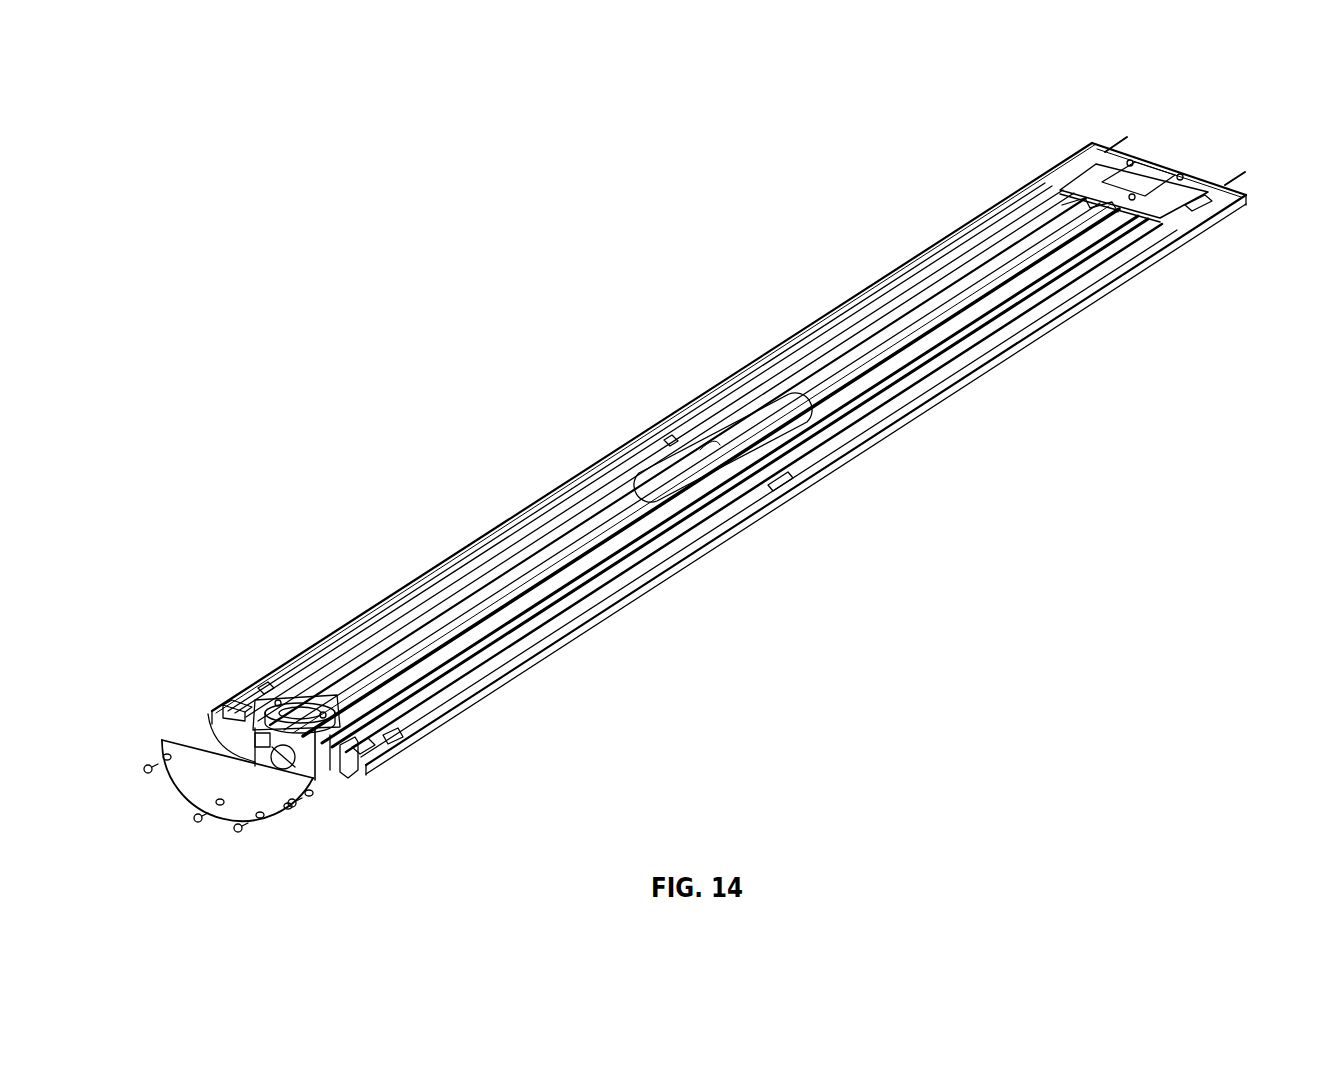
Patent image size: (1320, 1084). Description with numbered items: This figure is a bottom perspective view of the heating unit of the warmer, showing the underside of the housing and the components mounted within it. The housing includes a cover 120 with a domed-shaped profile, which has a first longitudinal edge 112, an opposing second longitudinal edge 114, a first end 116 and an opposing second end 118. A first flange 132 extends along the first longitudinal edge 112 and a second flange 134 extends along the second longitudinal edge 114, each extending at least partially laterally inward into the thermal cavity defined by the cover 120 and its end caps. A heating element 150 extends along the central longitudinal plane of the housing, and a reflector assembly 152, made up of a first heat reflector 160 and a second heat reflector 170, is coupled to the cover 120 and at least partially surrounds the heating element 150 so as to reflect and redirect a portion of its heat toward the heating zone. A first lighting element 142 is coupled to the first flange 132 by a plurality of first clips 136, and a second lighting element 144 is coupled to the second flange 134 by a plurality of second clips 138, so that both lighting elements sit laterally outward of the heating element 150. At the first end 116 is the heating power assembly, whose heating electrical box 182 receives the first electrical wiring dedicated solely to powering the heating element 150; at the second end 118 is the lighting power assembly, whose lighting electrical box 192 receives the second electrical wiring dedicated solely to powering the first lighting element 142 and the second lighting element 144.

The first longitudinal edge 112 is at (616, 430).
The second longitudinal edge 114 is at (747, 544).
The first end 116 is at (193, 841).
The second end 118 is at (1221, 133).
The cover 120 is at (330, 790).
The first flange 132 is at (215, 705).
The second flange 134 is at (352, 778).
The first clips 136 is at (670, 439).
The second clips 138 is at (778, 481).
The first lighting element 142 is at (485, 540).
The second lighting element 144 is at (455, 675).
The heating element 150 is at (848, 388).
The reflector assembly 152 is at (688, 456).
The first heat reflector 160 is at (883, 325).
The second heat reflector 170 is at (943, 315).
The heating electrical box 182 is at (306, 698).
The lighting electrical box 192 is at (1152, 171).